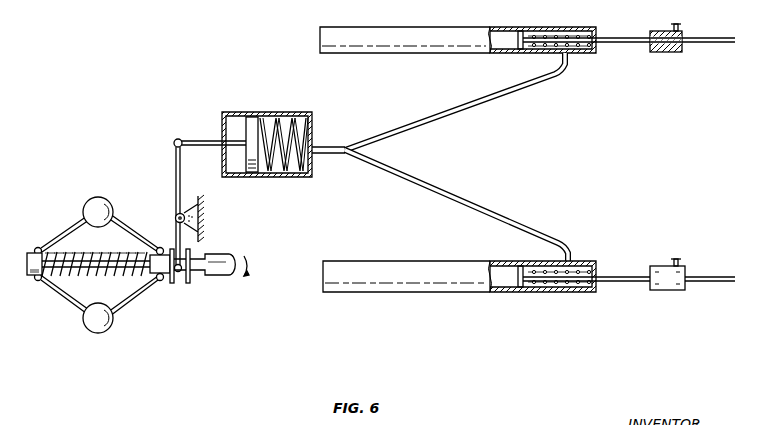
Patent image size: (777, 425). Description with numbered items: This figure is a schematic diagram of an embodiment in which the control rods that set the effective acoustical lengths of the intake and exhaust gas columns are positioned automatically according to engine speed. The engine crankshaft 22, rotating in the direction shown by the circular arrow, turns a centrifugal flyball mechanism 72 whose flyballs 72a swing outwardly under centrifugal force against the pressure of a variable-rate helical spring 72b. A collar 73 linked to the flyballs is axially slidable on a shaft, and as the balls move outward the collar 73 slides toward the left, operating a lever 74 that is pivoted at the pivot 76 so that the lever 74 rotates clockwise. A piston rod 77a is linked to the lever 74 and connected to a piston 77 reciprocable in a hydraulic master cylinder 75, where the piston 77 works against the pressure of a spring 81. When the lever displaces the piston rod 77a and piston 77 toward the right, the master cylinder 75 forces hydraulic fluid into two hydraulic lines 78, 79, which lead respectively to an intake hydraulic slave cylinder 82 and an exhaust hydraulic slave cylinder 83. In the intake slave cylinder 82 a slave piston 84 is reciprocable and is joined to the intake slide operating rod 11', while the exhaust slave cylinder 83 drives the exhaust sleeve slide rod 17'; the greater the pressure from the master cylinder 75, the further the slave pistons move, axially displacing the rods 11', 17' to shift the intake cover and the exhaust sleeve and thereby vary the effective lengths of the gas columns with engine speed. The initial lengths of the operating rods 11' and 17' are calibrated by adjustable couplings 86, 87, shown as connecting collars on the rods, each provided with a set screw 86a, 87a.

The intake slide operating rod 11' is at (629, 56).
The exhaust sleeve slide rod 17' is at (626, 262).
The engine crankshaft 22 is at (209, 275).
The centrifugal flyball mechanism 72 is at (54, 337).
The flyballs 72a is at (96, 198).
The variable-rate helical spring 72b is at (174, 142).
The collar 73 is at (181, 295).
The lever 74 is at (174, 173).
The hydraulic master cylinder 75 is at (233, 112).
The pivot 76 is at (186, 212).
The piston 77 is at (255, 173).
The piston rod 77a is at (202, 134).
The hydraulic line 78 is at (535, 87).
The hydraulic line 79 is at (538, 227).
The spring 81 is at (298, 174).
The intake hydraulic slave cylinder 82 is at (350, 30).
The exhaust hydraulic slave cylinder 83 is at (356, 264).
The slave piston 84 is at (518, 50).
The adjustable coupling 86 is at (669, 52).
The set screw 86a is at (680, 19).
The adjustable coupling 87 is at (668, 288).
The set screw 87a is at (680, 259).